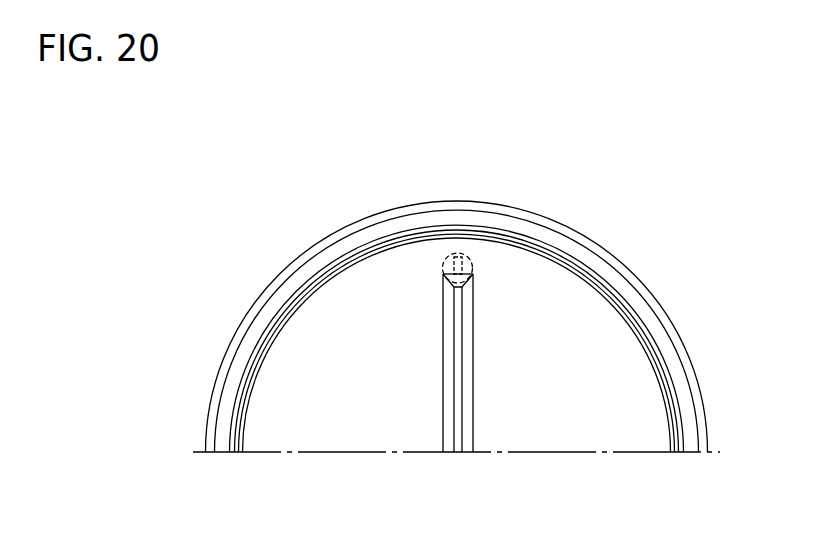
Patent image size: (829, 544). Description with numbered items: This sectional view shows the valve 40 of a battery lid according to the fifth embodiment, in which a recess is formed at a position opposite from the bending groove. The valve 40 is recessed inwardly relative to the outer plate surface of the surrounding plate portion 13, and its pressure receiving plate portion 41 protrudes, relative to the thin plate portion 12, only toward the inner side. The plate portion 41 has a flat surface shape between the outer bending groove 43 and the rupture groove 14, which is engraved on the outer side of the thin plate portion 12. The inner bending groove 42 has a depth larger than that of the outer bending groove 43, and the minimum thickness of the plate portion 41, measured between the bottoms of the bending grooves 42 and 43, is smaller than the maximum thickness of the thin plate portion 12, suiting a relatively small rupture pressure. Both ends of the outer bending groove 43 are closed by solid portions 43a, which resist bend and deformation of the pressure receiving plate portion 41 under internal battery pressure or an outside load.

The thin plate portion 12 is at (690, 446).
The surrounding plate portion 13 is at (484, 358).
The rupture groove 14 is at (678, 448).
The valve 40 is at (639, 273).
The pressure receiving plate portion 41 is at (352, 428).
The inner bending groove 42 is at (478, 263).
The outer bending groove 43 is at (446, 330).
The solid portions 43a is at (453, 282).